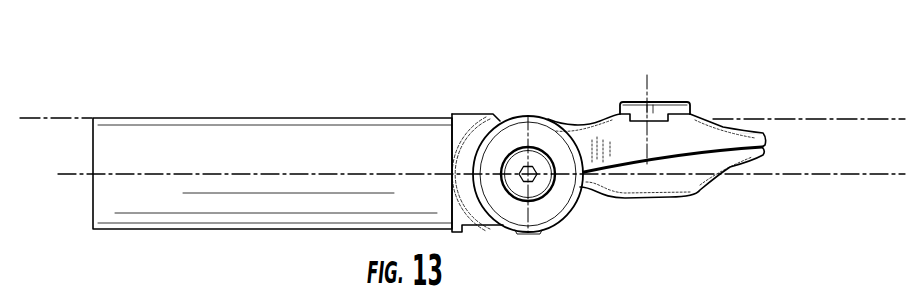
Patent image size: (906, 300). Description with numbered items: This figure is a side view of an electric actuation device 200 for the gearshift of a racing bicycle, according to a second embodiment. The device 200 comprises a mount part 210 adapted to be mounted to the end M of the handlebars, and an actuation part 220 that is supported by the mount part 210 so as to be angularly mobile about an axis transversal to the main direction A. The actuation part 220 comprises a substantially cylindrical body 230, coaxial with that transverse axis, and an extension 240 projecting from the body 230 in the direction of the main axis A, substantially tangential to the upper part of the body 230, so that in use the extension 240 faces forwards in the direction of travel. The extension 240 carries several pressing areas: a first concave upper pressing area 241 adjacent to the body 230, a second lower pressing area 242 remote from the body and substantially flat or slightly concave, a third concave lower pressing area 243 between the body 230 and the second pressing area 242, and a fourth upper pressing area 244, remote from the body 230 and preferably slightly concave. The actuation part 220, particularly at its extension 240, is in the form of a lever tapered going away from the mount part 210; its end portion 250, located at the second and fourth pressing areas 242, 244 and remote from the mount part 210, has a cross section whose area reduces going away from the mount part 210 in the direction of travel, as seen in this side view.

The main axis A is at (52, 118).
The end of handlebars M is at (224, 137).
The electric actuation device 200 is at (519, 72).
The mount part 210 is at (461, 118).
The actuation part 220 is at (676, 152).
The substantially cylindrical body 230 is at (510, 112).
The extension 240 is at (679, 93).
The first concave upper pressing area 241 is at (585, 121).
The second lower pressing area 242 is at (726, 180).
The third concave lower pressing area 243 is at (599, 192).
The fourth upper pressing area 244 is at (714, 151).
The end portion 250 is at (723, 130).